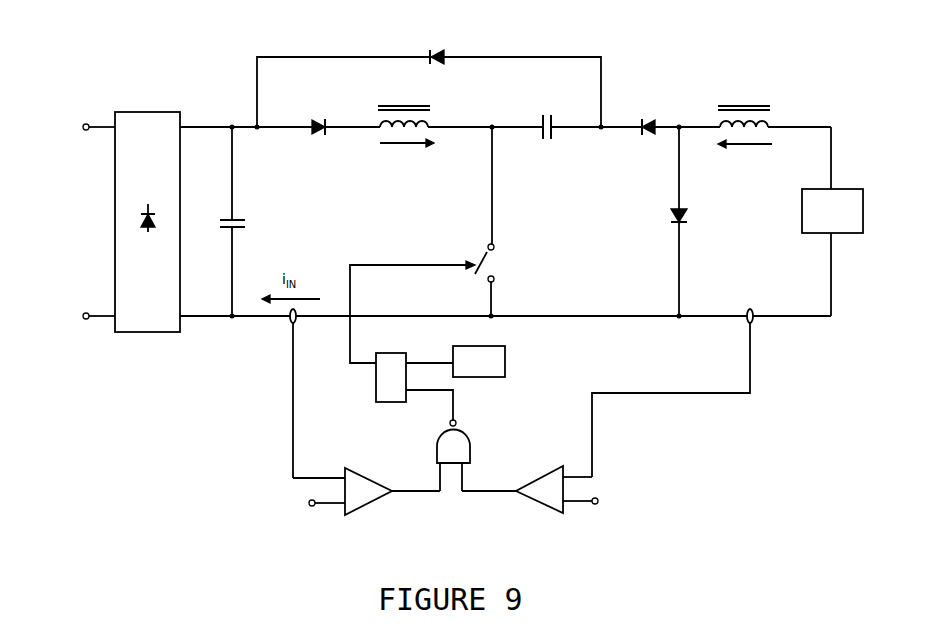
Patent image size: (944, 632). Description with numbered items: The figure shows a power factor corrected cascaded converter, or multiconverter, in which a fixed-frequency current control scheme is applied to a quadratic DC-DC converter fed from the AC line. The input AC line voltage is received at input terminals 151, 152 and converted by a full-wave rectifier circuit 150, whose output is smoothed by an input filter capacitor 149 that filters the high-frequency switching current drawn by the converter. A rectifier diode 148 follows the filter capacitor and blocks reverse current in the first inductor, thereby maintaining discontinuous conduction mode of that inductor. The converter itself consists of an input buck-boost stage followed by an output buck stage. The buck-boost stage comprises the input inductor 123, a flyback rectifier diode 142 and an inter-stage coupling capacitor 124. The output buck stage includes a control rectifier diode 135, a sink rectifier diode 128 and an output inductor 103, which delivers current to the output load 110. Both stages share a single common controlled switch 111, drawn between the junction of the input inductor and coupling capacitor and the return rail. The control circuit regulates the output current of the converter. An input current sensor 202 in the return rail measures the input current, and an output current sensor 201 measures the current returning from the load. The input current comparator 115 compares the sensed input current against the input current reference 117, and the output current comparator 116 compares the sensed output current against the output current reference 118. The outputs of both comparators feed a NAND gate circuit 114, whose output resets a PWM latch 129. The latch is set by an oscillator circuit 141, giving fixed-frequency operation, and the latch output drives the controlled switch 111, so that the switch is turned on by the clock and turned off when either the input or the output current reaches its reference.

The output inductor 103 is at (772, 108).
The output load 110 is at (866, 198).
The controlled switch 111 is at (485, 252).
The NAND gate circuit 114 is at (426, 442).
The input current comparator 115 is at (372, 510).
The output current comparator 116 is at (530, 505).
The input current reference 117 is at (318, 513).
The output current reference 118 is at (585, 513).
The input inductor 123 is at (405, 103).
The inter-stage coupling capacitor 124 is at (538, 112).
The sink rectifier diode 128 is at (695, 218).
The PWM latch 129 is at (372, 385).
The control rectifier diode 135 is at (648, 105).
The oscillator circuit 141 is at (510, 357).
The flyback rectifier diode 142 is at (428, 52).
The rectifier diode 148 is at (318, 113).
The input filter capacitor 149 is at (252, 224).
The full-wave rectifier circuit 150 is at (148, 335).
The input terminal 151 is at (82, 128).
The input terminal 152 is at (82, 317).
The output current sensor 201 is at (758, 325).
The input current sensor 202 is at (288, 325).